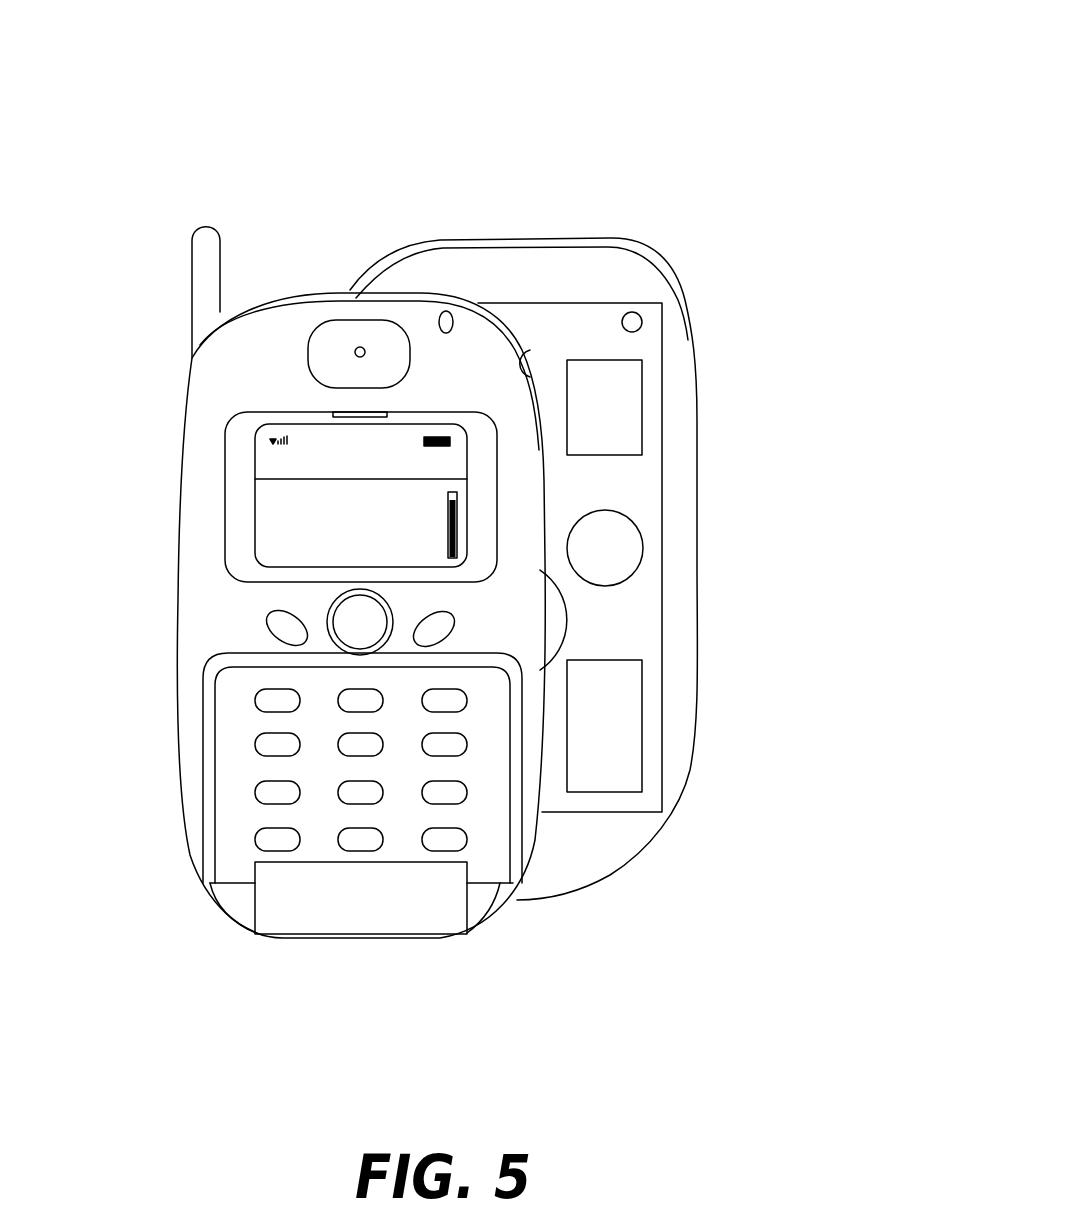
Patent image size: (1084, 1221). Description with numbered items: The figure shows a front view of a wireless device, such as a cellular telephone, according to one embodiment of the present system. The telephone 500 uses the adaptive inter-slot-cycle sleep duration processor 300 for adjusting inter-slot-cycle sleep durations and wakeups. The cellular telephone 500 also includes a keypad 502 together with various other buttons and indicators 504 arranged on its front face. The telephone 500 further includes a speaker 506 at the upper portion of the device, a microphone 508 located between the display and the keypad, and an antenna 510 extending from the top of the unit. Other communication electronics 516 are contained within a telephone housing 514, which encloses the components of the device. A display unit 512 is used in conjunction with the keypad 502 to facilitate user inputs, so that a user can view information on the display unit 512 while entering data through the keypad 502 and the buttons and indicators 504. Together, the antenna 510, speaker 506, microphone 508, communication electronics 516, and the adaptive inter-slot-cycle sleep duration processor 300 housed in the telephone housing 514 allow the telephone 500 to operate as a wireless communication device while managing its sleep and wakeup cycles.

The telephone 500 is at (682, 65).
The keypad 502 is at (222, 755).
The buttons and indicators 504 is at (436, 622).
The speaker 506 is at (387, 322).
The microphone 508 is at (360, 622).
The antenna 510 is at (208, 226).
The display unit 512 is at (232, 416).
The telephone housing 514 is at (203, 530).
The communication electronics 516 is at (642, 407).
The adaptive inter-slot-cycle sleep duration processor 300 is at (645, 548).